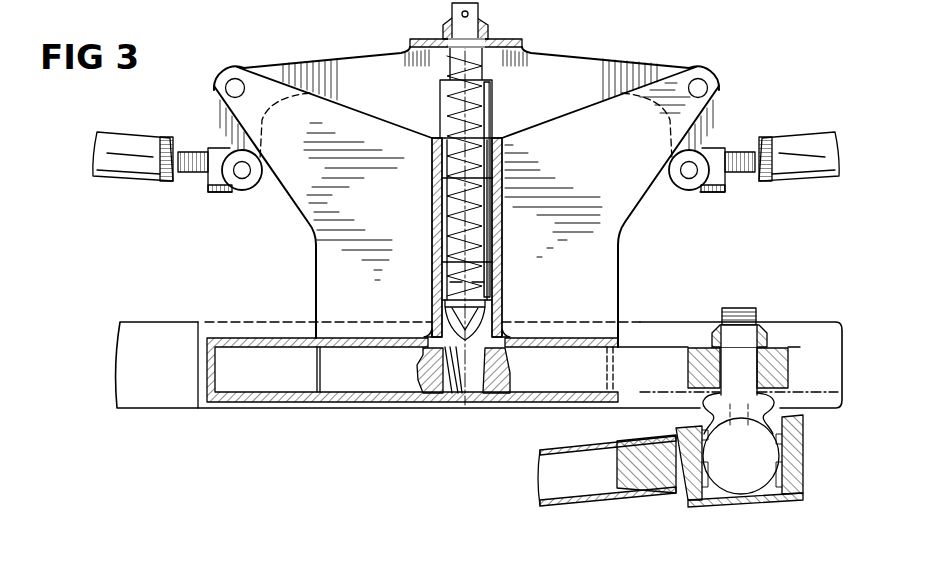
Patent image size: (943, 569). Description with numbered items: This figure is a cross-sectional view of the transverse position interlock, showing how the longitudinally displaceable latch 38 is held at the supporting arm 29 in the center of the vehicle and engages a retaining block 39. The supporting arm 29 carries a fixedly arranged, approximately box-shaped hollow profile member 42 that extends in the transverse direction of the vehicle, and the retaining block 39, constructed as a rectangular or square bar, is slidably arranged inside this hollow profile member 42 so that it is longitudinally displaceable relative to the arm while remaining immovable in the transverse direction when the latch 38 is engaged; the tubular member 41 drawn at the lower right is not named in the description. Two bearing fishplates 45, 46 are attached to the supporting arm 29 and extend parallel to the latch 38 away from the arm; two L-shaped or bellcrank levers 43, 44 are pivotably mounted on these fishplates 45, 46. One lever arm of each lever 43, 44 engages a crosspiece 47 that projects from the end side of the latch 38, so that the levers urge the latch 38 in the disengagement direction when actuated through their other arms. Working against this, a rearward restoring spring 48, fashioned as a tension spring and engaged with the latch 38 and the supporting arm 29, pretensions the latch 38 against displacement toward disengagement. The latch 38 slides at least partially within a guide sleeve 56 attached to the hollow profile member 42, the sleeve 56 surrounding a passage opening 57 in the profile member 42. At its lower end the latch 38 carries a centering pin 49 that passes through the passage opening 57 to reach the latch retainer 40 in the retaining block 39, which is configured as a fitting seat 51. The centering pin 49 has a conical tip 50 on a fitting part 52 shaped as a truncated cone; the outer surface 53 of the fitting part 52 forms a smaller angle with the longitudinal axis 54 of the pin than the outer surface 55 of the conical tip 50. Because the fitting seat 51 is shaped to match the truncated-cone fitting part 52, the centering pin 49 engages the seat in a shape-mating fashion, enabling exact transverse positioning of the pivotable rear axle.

The supporting arm 29 is at (168, 330).
The latch 38 is at (431, 272).
The retaining block 39 is at (648, 370).
The latch retainer 40 is at (436, 383).
The tube 41 is at (563, 452).
The box-shaped hollow profile member 42 is at (265, 405).
The bellcrank lever 43 is at (600, 68).
The bellcrank lever 44 is at (287, 70).
The bearing fishplate 45 is at (597, 268).
The bearing fishplate 46 is at (325, 258).
The crosspiece 47 is at (512, 38).
The restoring spring 48 is at (432, 165).
The centering pin 49 is at (492, 293).
The conical tip 50 is at (534, 320).
The fitting seat 51 is at (470, 384).
The fitting part 52 is at (436, 313).
The outer surface of the fitting part 53 is at (490, 313).
The longitudinal axis 54 is at (501, 231).
The outer surface of the conical tip 55 is at (422, 335).
The guide sleeve 56 is at (503, 160).
The passage opening 57 is at (508, 373).